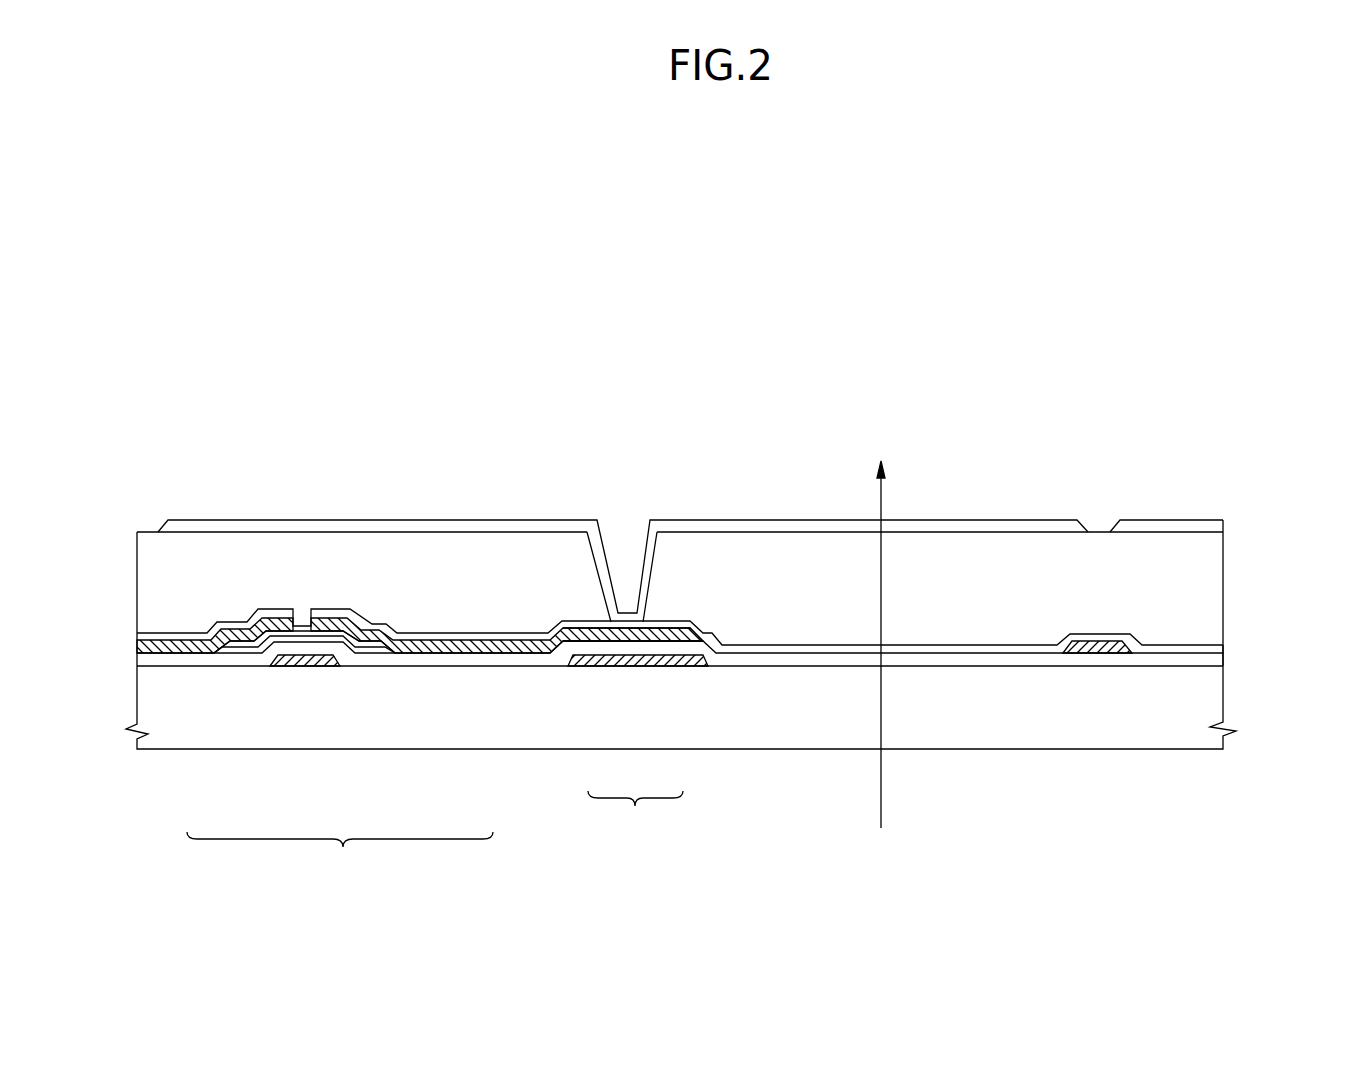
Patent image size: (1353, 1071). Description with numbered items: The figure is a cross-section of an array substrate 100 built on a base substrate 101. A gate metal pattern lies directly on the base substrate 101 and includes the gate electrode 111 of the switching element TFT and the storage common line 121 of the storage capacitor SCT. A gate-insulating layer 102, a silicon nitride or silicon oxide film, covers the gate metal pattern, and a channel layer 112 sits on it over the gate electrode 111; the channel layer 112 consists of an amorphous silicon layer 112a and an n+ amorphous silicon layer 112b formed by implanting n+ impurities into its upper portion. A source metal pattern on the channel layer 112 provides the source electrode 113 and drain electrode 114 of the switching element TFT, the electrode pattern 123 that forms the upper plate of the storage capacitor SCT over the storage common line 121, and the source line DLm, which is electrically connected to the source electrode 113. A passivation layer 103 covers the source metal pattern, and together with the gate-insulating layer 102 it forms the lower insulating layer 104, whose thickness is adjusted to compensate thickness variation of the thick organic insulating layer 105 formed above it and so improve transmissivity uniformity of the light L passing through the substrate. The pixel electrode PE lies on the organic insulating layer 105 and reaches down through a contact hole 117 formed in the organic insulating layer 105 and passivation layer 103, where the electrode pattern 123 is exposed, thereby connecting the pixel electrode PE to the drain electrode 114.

The array substrate 100 is at (125, 531).
The base substrate 101 is at (1223, 702).
The gate-insulating layer 102 is at (1218, 659).
The passivation layer 103 is at (1223, 649).
The lower insulating layer 104 is at (1285, 633).
The organic insulating layer 105 is at (1223, 597).
The gate electrode 111 is at (293, 658).
The channel layer 112 is at (323, 732).
The amorphous silicon layer 112a is at (355, 641).
The n+ amorphous silicon layer 112b is at (375, 640).
The source electrode 113 is at (203, 645).
The drain electrode 114 is at (469, 651).
The contact hole 117 is at (639, 543).
The storage common line 121 is at (604, 660).
The electrode pattern 123 is at (659, 632).
The pixel electrode PE is at (425, 530).
The switching element TFT is at (340, 852).
The storage capacitor SCT is at (635, 812).
The source line DLm is at (1100, 646).
The light L is at (883, 629).